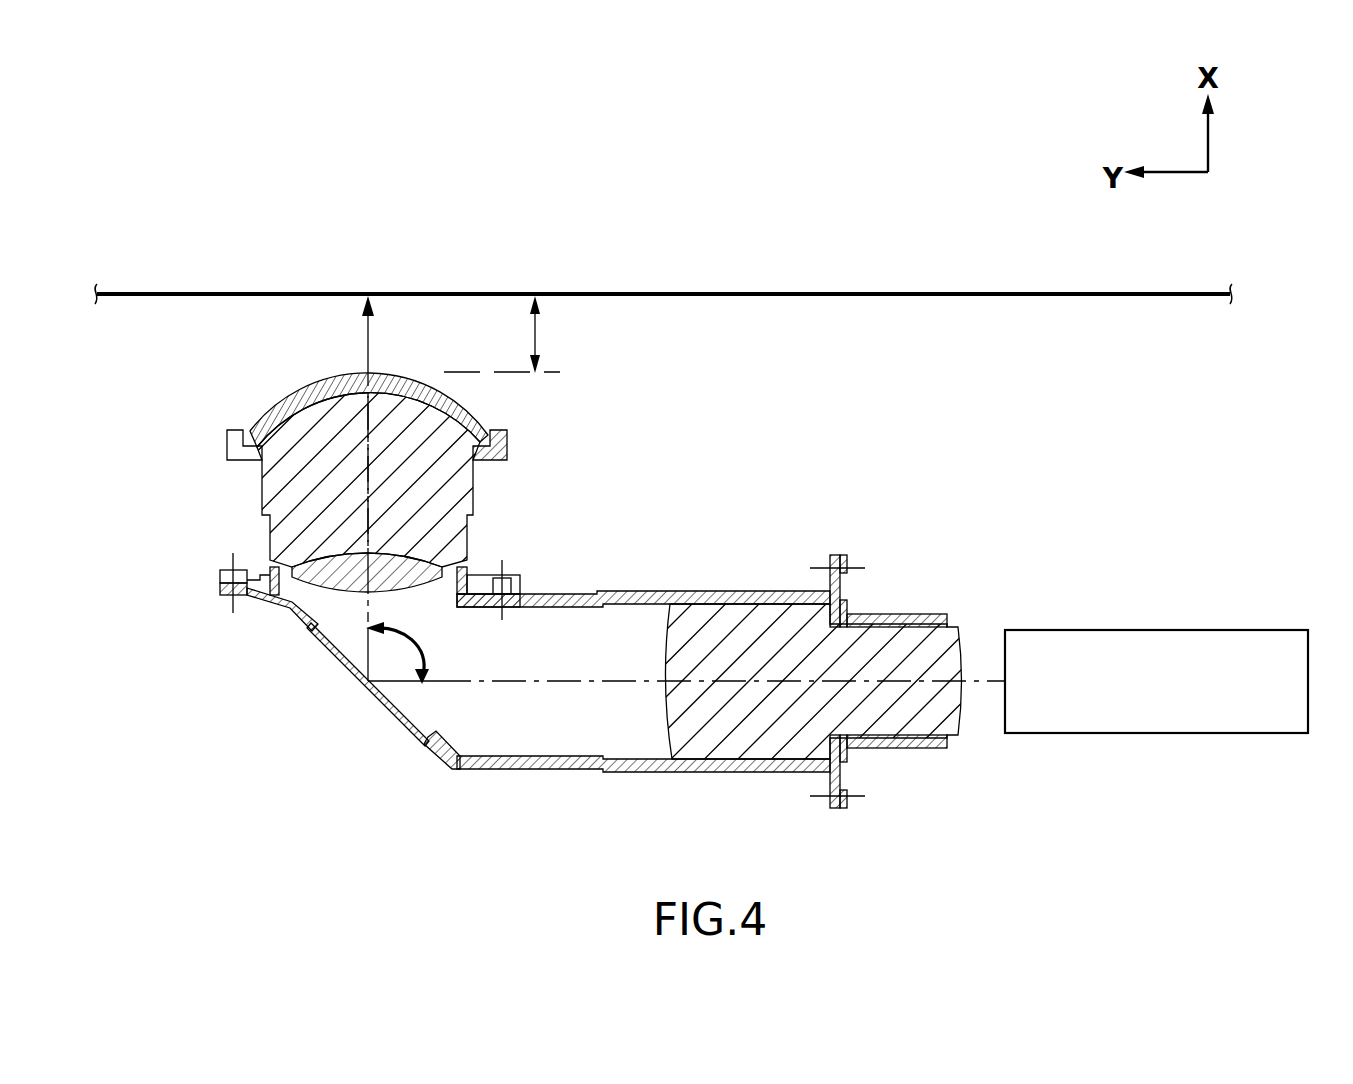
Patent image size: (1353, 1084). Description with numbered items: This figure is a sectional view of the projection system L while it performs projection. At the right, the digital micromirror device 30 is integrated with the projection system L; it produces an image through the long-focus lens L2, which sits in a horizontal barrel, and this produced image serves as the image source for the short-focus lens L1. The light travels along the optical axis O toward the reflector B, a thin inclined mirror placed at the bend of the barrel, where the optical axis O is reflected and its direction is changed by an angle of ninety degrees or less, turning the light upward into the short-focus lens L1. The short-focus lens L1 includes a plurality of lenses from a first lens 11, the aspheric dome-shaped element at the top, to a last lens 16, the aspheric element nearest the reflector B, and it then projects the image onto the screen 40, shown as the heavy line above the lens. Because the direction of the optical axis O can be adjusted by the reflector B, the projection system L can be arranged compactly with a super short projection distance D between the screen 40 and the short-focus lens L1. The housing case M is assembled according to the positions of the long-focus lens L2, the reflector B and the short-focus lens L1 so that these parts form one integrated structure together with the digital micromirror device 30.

The first lens 11 is at (288, 406).
The last lens 16 is at (318, 568).
The digital micromirror device 30 is at (1158, 630).
The screen 40 is at (1125, 298).
The short-focus lens L1 is at (437, 507).
The long-focus lens L2 is at (769, 630).
The reflector B is at (332, 646).
The optical axis O is at (330, 716).
The housing case M is at (642, 777).
The projection distance D is at (502, 334).
The projection system L is at (96, 364).